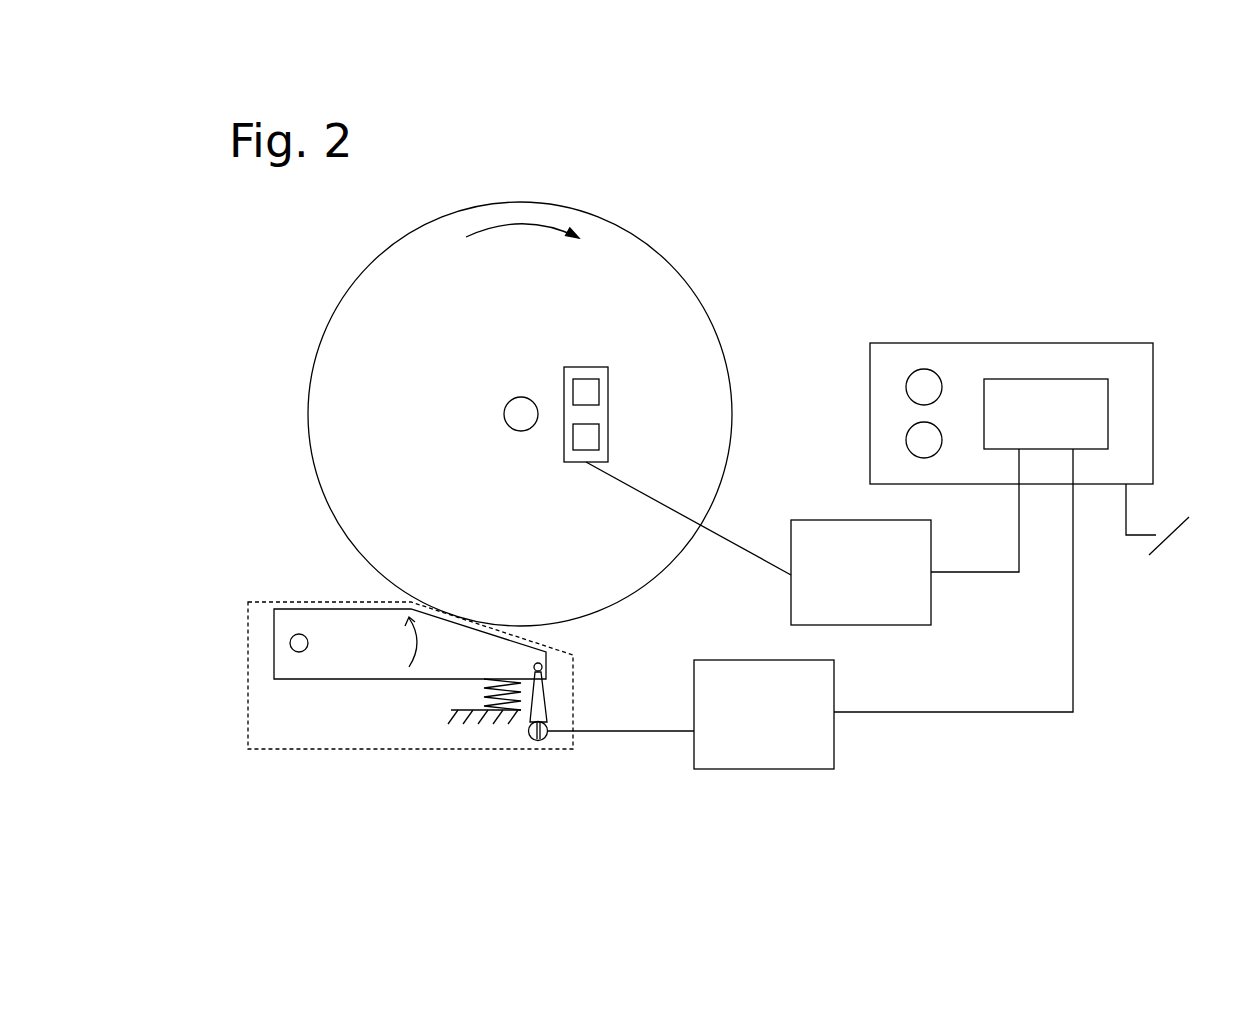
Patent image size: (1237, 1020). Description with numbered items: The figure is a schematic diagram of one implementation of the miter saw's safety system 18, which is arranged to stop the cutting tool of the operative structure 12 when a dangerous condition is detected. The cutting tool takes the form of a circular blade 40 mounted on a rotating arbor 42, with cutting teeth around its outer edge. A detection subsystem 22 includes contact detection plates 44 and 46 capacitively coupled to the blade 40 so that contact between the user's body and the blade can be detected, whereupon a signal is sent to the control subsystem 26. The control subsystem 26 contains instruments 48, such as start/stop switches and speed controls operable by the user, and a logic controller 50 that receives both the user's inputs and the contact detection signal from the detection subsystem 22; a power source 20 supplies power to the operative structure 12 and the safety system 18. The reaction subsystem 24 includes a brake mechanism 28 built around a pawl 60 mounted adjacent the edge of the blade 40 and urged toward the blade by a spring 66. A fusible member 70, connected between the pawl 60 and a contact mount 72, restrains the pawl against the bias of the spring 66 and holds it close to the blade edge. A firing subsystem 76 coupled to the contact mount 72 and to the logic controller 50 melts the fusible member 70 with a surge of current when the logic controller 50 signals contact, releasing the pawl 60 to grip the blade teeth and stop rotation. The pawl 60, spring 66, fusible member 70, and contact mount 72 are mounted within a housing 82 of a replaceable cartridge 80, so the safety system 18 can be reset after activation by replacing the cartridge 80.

The operative structure 12 is at (721, 211).
The safety system 18 is at (999, 243).
The power source 20 is at (1159, 530).
The detection subsystem 22 is at (881, 556).
The reaction subsystem 24 is at (800, 804).
The control subsystem 26 is at (1048, 341).
The brake mechanism 28 is at (314, 703).
The circular blade 40 is at (409, 301).
The arbor 42 is at (512, 417).
The contact detection plate 44 is at (593, 387).
The contact detection plate 46 is at (593, 430).
The instruments 48 is at (912, 387).
The logic controller 50 is at (1058, 416).
The pawl 60 is at (320, 615).
The spring 66 is at (458, 694).
The fusible member 70 is at (543, 708).
The contact mount 72 is at (532, 738).
The firing subsystem 76 is at (784, 698).
The replaceable cartridge 80 is at (275, 783).
The housing 82 is at (335, 748).